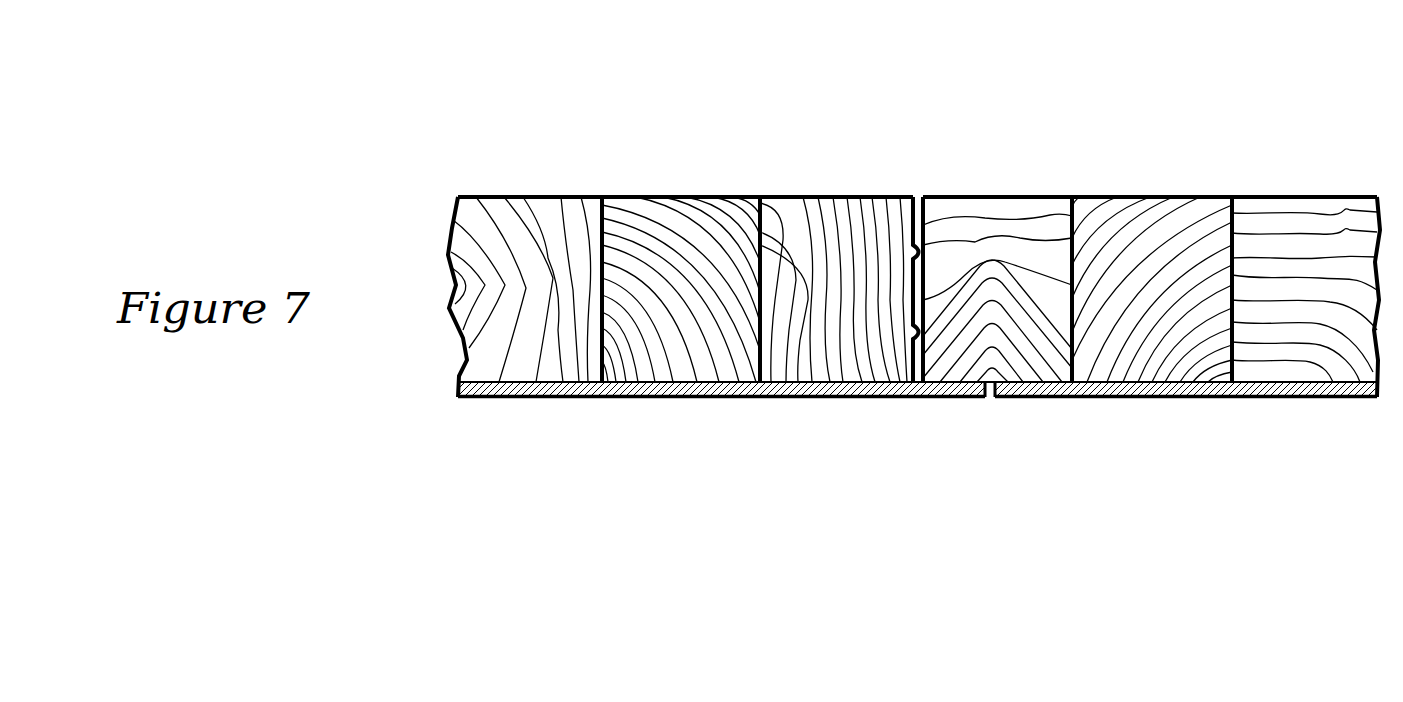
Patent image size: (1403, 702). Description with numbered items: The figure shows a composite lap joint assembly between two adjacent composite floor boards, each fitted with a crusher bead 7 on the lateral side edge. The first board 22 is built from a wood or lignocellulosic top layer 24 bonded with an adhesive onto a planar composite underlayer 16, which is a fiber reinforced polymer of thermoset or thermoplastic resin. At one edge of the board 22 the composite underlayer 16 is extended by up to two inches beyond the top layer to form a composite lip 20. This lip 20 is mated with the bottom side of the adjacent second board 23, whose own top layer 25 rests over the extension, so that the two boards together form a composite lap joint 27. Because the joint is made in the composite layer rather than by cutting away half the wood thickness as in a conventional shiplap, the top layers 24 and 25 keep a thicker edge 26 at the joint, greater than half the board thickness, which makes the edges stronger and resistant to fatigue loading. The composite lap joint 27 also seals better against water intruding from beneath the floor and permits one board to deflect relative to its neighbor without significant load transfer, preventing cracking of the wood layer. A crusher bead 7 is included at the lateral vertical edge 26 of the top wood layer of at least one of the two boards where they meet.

The crusher bead 7 is at (925, 332).
The composite underlayer 16 is at (917, 437).
The composite lip 20 is at (972, 400).
The board 22 is at (683, 224).
The adjacent board 23 is at (1151, 224).
The top layer 24 is at (651, 275).
The top layer 25 is at (1132, 275).
The thicker edge 26 is at (908, 228).
The composite lap joint 27 is at (914, 310).